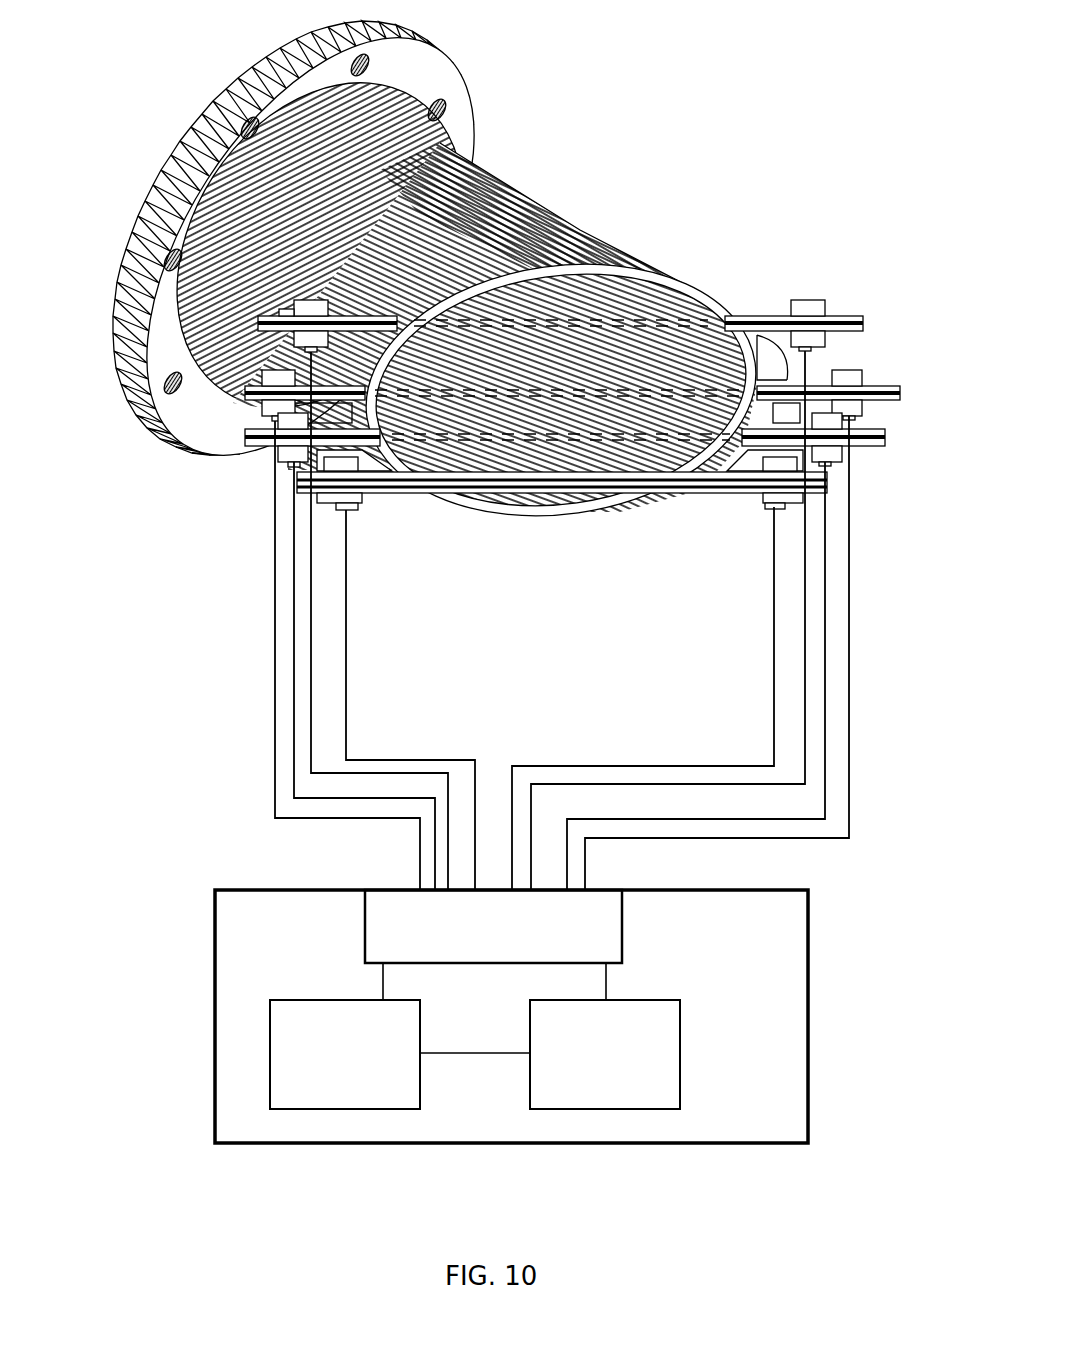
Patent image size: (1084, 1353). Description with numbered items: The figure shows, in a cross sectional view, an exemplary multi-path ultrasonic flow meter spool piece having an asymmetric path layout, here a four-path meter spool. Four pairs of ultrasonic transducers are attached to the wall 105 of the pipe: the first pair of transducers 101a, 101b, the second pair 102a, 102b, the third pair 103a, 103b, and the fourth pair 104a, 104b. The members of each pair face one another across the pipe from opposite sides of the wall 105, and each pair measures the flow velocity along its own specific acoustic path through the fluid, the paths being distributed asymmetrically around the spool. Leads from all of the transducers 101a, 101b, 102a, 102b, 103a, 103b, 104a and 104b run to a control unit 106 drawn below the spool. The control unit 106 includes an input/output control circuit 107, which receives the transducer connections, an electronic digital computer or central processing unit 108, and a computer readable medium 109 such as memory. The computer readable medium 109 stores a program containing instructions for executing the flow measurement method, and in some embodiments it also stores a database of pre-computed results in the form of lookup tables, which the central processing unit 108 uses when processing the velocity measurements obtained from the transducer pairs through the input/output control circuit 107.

The ultrasonic transducer 101a is at (310, 325).
The ultrasonic transducer 101b is at (832, 300).
The ultrasonic transducer 102a is at (262, 410).
The ultrasonic transducer 102b is at (834, 372).
The ultrasonic transducer 103a is at (282, 460).
The ultrasonic transducer 103b is at (830, 452).
The ultrasonic transducer 104a is at (362, 498).
The ultrasonic transducer 104b is at (770, 499).
The wall of the pipe 105 is at (597, 240).
The control unit 106 is at (620, 1145).
The input/output control circuit 107 is at (624, 906).
The central processing unit 108 is at (343, 1000).
The computer readable medium 109 is at (680, 1035).